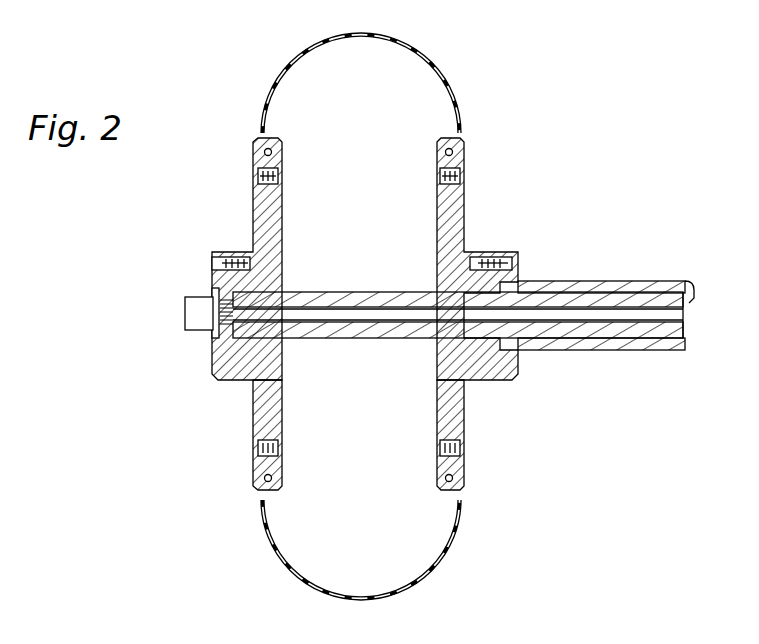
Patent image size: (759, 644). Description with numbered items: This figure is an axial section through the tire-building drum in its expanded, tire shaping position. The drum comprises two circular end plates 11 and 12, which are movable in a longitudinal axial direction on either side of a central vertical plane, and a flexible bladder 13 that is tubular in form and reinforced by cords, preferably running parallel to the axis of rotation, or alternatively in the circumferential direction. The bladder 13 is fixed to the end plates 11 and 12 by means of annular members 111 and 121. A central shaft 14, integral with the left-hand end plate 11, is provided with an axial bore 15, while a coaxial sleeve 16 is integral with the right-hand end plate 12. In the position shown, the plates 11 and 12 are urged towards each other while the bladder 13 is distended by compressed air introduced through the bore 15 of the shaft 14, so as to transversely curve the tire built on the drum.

The circular end plate 11 is at (260, 221).
The annular member 111 is at (260, 462).
The circular end plate 12 is at (458, 203).
The annular member 121 is at (456, 461).
The flexible bladder 13 is at (420, 48).
The central shaft 14 is at (569, 330).
The axial bore 15 is at (625, 315).
The coaxial sleeve 16 is at (594, 282).